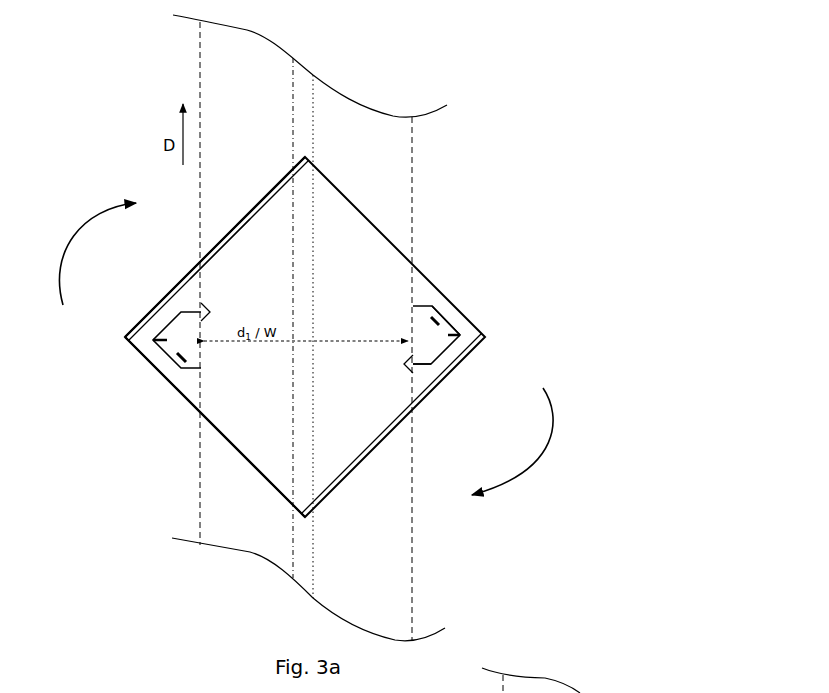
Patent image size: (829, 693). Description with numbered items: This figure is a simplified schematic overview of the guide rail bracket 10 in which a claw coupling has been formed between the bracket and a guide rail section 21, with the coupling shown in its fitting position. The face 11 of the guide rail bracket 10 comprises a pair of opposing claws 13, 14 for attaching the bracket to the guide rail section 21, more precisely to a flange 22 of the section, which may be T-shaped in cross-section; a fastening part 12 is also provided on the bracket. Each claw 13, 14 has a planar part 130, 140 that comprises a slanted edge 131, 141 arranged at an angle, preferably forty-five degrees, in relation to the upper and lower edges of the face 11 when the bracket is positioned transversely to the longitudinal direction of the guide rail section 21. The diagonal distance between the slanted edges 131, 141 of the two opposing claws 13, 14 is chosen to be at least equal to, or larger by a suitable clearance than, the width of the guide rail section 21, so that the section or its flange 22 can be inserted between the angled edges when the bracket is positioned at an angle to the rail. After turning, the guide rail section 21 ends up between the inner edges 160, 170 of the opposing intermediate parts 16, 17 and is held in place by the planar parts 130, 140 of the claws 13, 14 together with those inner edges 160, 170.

The guide rail bracket 10 is at (457, 259).
The face 11 is at (195, 387).
The fastening part 12 is at (133, 343).
The claw 13 is at (437, 352).
The claw 14 is at (172, 322).
The intermediate part 16 is at (461, 336).
The intermediate part 17 is at (155, 341).
The guide rail section 21 is at (259, 151).
The flange 22 is at (380, 570).
The planar part 130 is at (437, 344).
The slanted edge 131 is at (414, 368).
The planar part 140 is at (187, 329).
The slanted edge 141 is at (203, 303).
The inner side of the intermediate part 160 is at (455, 343).
The inner side of the intermediate part 170 is at (168, 335).